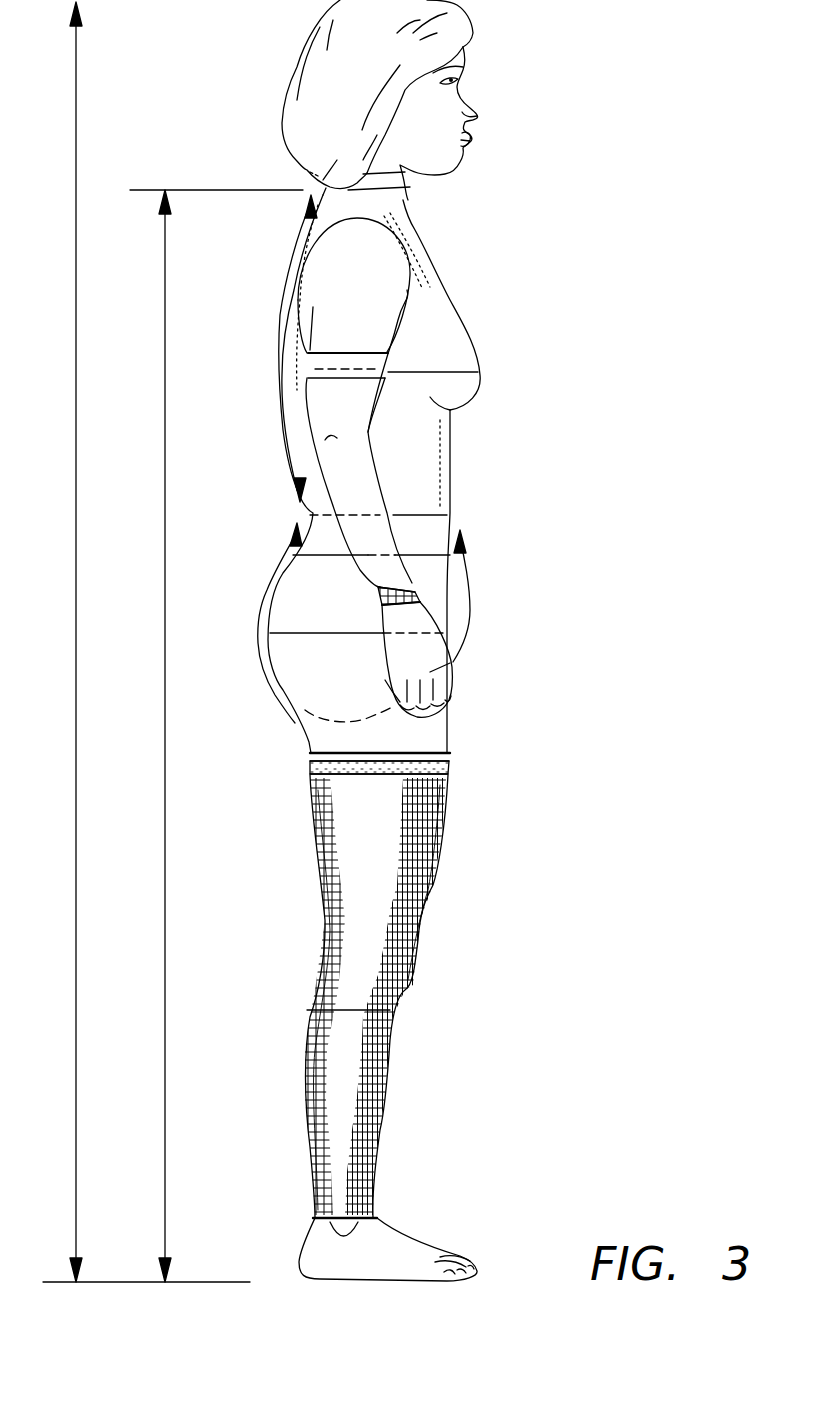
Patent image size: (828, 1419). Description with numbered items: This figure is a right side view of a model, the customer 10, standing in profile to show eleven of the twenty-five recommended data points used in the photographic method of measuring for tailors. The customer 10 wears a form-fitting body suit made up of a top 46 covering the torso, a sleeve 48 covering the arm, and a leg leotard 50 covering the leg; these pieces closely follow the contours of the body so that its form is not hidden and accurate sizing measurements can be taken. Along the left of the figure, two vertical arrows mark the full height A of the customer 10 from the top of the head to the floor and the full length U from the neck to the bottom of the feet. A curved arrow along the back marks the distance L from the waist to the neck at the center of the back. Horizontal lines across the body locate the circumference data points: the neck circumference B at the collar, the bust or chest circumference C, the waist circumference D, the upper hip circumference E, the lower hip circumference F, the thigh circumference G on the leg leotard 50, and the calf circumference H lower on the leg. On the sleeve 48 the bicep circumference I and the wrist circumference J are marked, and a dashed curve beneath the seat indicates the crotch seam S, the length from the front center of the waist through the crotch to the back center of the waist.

The customer 10 is at (530, 187).
The top 46 is at (414, 443).
The sleeve 48 is at (359, 472).
The leg leotard 50 is at (381, 875).
The full height A is at (64, 642).
The full length U is at (173, 736).
The waist-to-neck back distance L is at (361, 459).
The neck circumference B is at (365, 204).
The bust or chest circumference C is at (422, 357).
The waist circumference D is at (410, 502).
The upper hip circumference E is at (410, 538).
The lower hip circumference F is at (336, 614).
The thigh circumference G is at (380, 792).
The calf circumference H is at (350, 1029).
The bicep circumference I is at (340, 395).
The wrist circumference J is at (385, 574).
The crotch seam S is at (349, 708).